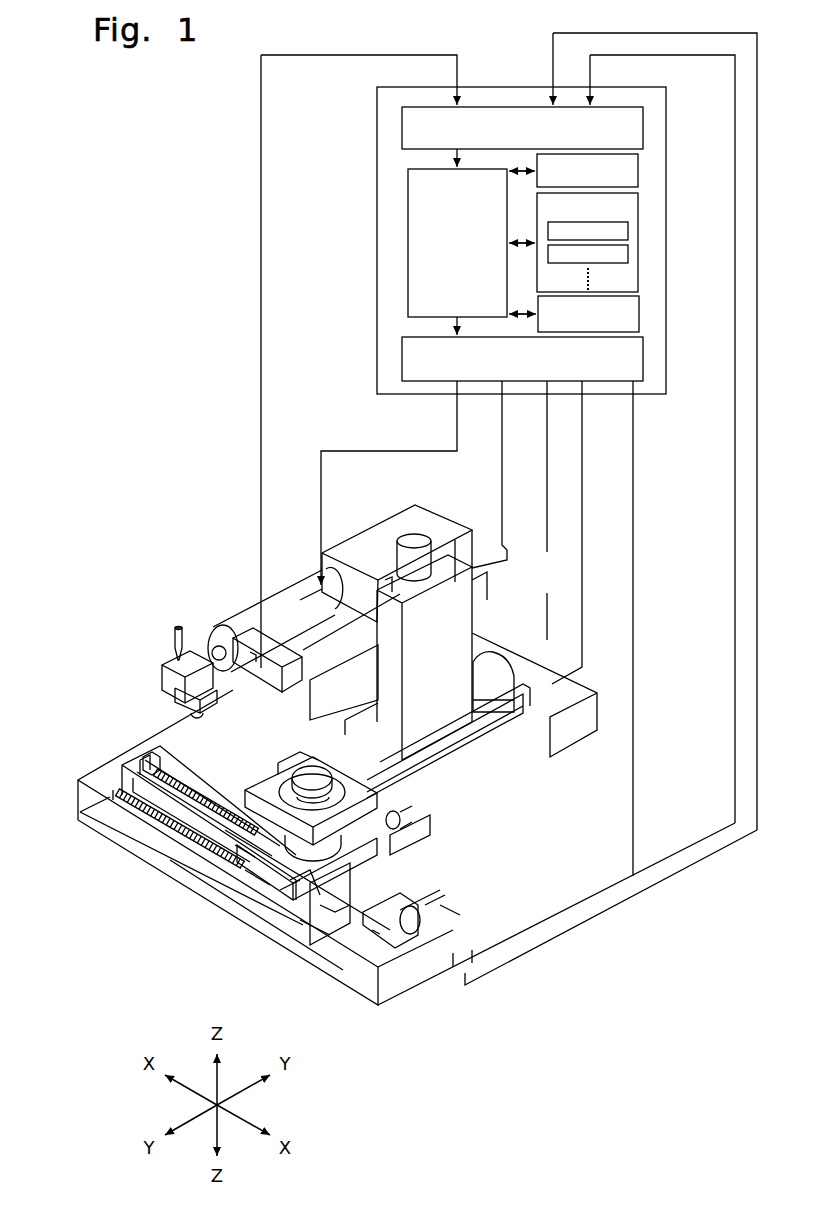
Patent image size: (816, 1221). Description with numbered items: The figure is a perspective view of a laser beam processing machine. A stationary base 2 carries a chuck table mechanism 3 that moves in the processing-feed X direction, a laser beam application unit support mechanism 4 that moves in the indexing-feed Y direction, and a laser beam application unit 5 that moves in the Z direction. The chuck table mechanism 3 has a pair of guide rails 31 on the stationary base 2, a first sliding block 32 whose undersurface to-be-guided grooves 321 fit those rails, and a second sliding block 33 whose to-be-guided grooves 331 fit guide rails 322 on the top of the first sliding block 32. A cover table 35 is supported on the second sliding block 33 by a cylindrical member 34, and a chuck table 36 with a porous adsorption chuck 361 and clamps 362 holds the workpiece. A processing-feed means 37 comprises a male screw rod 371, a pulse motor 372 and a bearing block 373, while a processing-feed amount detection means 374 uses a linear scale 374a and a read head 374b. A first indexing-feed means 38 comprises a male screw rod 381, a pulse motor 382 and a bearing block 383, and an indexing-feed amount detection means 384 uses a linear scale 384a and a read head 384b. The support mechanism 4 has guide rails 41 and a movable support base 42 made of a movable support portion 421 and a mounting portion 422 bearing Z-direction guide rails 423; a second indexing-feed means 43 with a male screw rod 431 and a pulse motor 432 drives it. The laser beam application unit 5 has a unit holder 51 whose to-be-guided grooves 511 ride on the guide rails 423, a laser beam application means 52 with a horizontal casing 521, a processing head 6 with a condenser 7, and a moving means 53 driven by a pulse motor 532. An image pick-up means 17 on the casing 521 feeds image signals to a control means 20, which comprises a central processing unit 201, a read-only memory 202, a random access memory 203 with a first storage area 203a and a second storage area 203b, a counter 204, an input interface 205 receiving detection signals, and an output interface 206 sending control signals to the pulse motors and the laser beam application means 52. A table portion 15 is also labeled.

The stationary base 2 is at (535, 852).
The chuck table mechanism 3 is at (595, 925).
The laser beam application unit support mechanism 4 is at (544, 703).
The laser beam application unit 5 is at (248, 582).
The processing head 6 is at (165, 660).
The condenser 7 is at (172, 692).
The table portion 15 is at (172, 630).
The image pick-up means 17 is at (250, 652).
The control means 20 is at (497, 84).
The guide rails 31 is at (145, 758).
The first sliding block 32 is at (275, 915).
The second sliding block 33 is at (365, 856).
The cylindrical member 34 is at (335, 915).
The cover table 35 is at (330, 800).
The chuck table 36 is at (262, 770).
The processing-feed means 37 is at (360, 940).
The first indexing-feed means 38 is at (380, 838).
The guide rails 41 is at (500, 722).
The movable support base 42 is at (476, 620).
The second indexing-feed means 43 is at (520, 672).
The unit holder 51 is at (385, 520).
The laser beam application means 52 is at (276, 584).
The moving means 53 is at (425, 499).
The central processing unit 201 is at (408, 212).
The read-only memory 202 is at (638, 180).
The random access memory 203 is at (621, 242).
The first storage area 203a is at (588, 231).
The second storage area 203b is at (638, 240).
The counter 204 is at (639, 302).
The input interface 205 is at (402, 128).
The output interface 206 is at (402, 359).
The to-be-guided grooves 321 is at (325, 935).
The guide rails 322 is at (240, 885).
The to-be-guided grooves 331 is at (210, 865).
The adsorption chuck 361 is at (332, 778).
The clamps 362 is at (282, 760).
The male screw rod 371 is at (160, 820).
The pulse motor 372 is at (440, 960).
The bearing block 373 is at (145, 752).
The processing-feed amount detection means 374 is at (300, 900).
The linear scale 374a is at (80, 812).
The read head 374b is at (290, 895).
The male screw rod 381 is at (230, 862).
The pulse motor 382 is at (400, 822).
The bearing block 383 is at (250, 890).
The indexing-feed amount detection means 384 is at (395, 935).
The linear scale 384a is at (378, 938).
The read head 384b is at (440, 855).
The movable support portion 421 is at (328, 680).
The mounting portion 422 is at (478, 590).
The guide rails 423 is at (388, 560).
The male screw rod 431 is at (345, 718).
The pulse motor 432 is at (540, 622).
The to-be-guided grooves 511 is at (320, 585).
The casing 521 is at (242, 622).
The pulse motor 532 is at (424, 540).